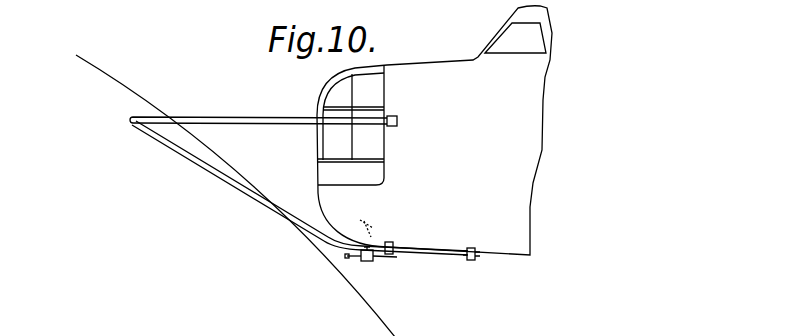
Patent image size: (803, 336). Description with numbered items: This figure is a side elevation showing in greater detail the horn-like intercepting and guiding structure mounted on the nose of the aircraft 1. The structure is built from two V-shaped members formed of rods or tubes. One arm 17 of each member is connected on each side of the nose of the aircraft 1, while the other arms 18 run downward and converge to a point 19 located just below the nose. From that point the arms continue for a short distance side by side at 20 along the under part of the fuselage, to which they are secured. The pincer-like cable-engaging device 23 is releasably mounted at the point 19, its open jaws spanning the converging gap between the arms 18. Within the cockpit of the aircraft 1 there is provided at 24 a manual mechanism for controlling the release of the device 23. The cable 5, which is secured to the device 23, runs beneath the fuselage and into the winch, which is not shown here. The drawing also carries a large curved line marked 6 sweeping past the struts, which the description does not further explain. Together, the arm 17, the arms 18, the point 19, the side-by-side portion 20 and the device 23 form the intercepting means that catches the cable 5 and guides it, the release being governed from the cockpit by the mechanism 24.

The aircraft 1 is at (434, 130).
The cable 5 is at (395, 259).
The propeller plane curve 6 is at (168, 107).
The arm 17 is at (243, 117).
The arms 18 is at (238, 193).
The point 19 is at (366, 261).
The side by side portion 20 is at (436, 257).
The pincer-like cable-engaging device 23 is at (350, 258).
The manual mechanism 24 is at (378, 240).